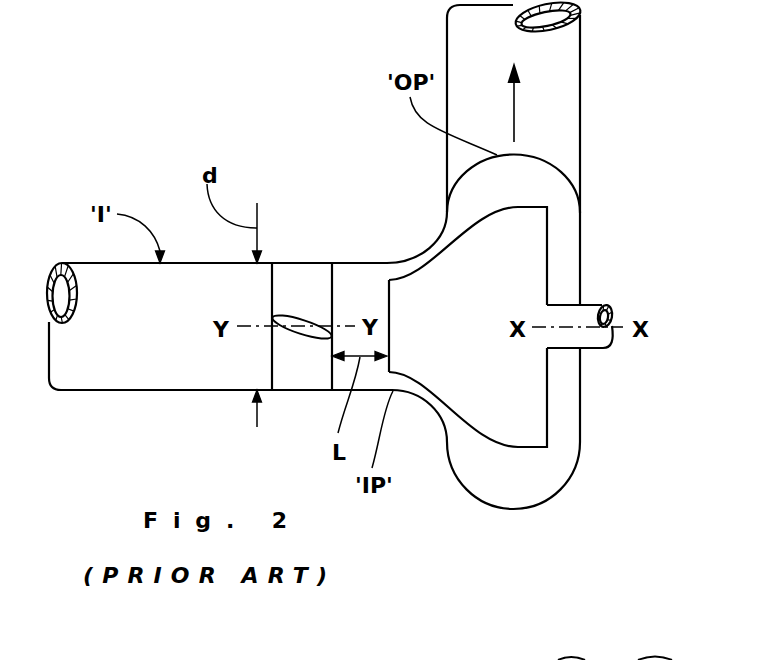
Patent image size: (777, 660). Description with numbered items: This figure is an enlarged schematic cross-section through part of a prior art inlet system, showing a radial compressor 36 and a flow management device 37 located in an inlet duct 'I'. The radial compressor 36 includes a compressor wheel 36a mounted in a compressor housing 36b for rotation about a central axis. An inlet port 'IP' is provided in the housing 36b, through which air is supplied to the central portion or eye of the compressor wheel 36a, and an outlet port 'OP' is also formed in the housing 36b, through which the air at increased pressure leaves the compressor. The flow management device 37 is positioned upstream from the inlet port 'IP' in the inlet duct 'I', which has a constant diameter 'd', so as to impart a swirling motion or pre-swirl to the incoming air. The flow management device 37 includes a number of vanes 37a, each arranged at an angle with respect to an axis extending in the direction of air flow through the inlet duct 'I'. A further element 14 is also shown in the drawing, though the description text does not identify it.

The branch port pipe 14 is at (592, 293).
The radial compressor 36 is at (420, 243).
The compressor wheel 36a is at (490, 210).
The compressor housing 36b is at (450, 463).
The flow management device 37 is at (320, 295).
The vanes 37a is at (301, 347).